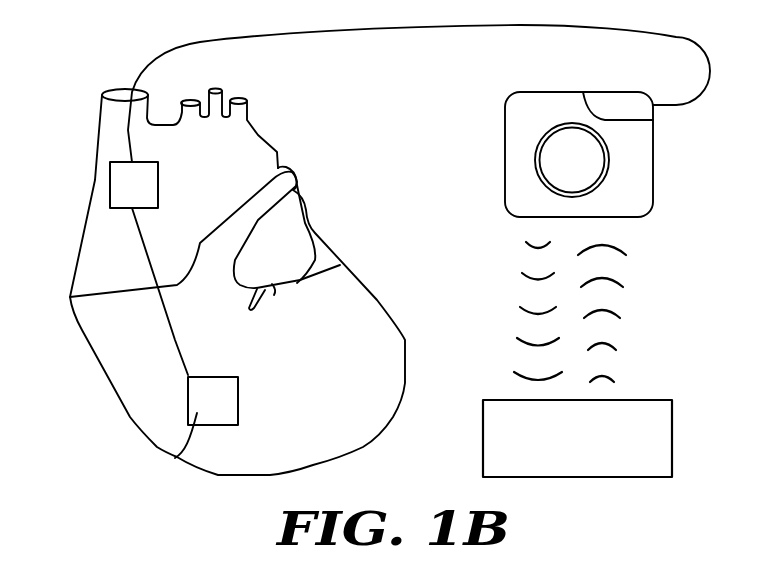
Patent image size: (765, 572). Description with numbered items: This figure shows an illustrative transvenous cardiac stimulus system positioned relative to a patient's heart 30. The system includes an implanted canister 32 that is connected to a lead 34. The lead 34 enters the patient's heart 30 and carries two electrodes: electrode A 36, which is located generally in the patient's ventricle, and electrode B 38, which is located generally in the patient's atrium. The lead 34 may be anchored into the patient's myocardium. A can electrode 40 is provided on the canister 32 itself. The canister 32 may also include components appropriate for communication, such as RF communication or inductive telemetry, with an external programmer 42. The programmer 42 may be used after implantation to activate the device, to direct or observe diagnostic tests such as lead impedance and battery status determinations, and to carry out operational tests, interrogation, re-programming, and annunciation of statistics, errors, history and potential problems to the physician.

The heart 30 is at (281, 95).
The canister 32 is at (527, 123).
The lead 34 is at (550, 27).
The electrode A 36 is at (175, 458).
The electrode B 38 is at (120, 168).
The can electrode 40 is at (543, 155).
The programmer 42 is at (500, 440).